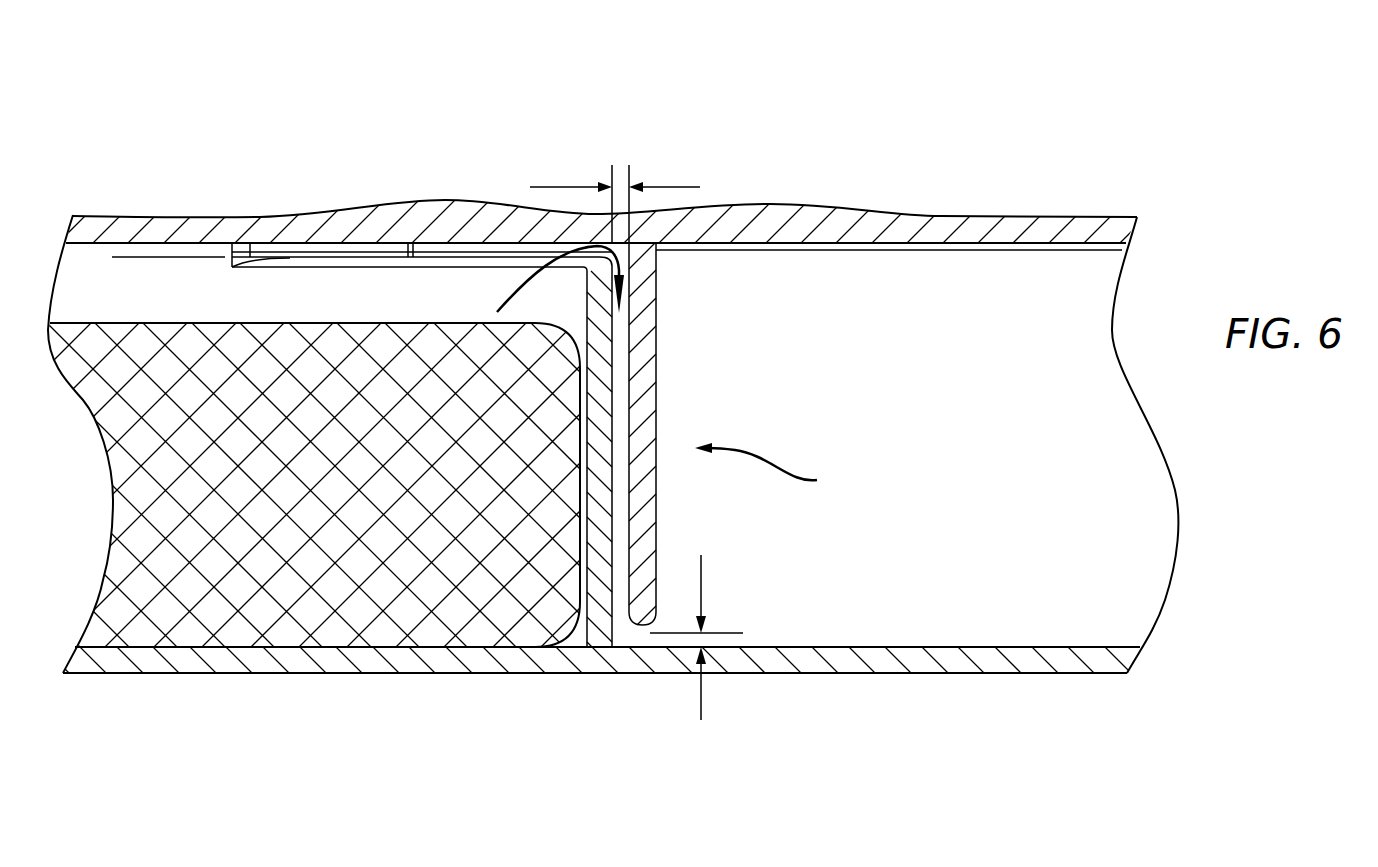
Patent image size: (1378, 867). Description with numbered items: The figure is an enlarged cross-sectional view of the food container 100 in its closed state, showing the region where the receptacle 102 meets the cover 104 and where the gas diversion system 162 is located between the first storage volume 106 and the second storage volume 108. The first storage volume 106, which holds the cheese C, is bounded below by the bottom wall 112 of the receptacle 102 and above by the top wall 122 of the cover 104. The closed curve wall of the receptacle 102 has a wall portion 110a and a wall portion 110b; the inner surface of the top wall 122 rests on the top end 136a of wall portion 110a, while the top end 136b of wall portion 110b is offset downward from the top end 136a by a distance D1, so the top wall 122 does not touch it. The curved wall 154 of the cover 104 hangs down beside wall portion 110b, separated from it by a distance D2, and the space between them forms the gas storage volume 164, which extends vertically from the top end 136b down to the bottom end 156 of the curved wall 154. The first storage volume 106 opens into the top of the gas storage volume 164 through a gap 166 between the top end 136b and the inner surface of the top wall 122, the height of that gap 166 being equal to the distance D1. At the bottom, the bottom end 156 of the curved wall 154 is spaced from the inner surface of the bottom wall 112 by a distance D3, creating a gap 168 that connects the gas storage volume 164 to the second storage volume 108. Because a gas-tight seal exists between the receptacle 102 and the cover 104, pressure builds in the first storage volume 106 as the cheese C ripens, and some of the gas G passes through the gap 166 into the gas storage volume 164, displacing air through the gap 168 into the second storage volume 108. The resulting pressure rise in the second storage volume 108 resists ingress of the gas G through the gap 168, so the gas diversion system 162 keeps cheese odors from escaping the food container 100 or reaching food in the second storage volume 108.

The food container 100 is at (1184, 157).
The receptacle 102 is at (1077, 693).
The cover 104 is at (863, 175).
The first storage volume 106 is at (110, 303).
The second storage volume 108 is at (1055, 467).
The closed curve wall portion 110a is at (415, 252).
The closed curve wall portion 110b is at (598, 630).
The bottom wall 112 is at (155, 673).
The top wall 122 is at (1000, 217).
The top end 136a is at (297, 247).
The top end 136b is at (600, 268).
The curved wall 154 is at (657, 404).
The bottom end 156 is at (655, 628).
The gas diversion system 162 is at (773, 469).
The gas storage volume 164 is at (622, 357).
The gap 166 is at (622, 250).
The gap 168 is at (630, 637).
The distance D1 is at (169, 323).
The distance D2 is at (670, 187).
The distance D3 is at (702, 702).
The gas G is at (516, 300).
The cheese C is at (168, 512).